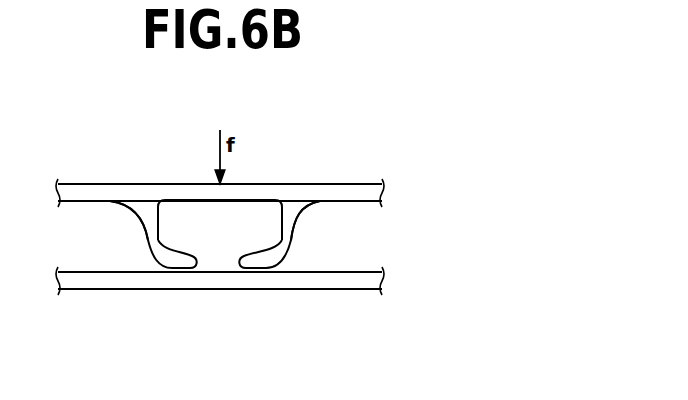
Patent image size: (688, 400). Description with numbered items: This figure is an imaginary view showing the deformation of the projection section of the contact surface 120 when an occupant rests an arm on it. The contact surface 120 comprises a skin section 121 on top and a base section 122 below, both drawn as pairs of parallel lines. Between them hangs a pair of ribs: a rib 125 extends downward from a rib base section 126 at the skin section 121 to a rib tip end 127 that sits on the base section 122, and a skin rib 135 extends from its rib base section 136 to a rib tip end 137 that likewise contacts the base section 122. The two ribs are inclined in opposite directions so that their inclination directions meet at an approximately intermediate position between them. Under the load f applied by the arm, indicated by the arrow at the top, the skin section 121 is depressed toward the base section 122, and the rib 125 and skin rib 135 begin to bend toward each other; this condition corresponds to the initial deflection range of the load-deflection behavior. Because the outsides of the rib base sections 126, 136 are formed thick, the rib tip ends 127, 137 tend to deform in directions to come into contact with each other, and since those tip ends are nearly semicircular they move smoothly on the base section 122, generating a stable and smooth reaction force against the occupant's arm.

The contact surface 120 is at (392, 109).
The skin section 121 is at (185, 183).
The base section 122 is at (350, 278).
The rib 125 is at (151, 239).
The rib base section 126 is at (142, 201).
The rib tip end 127 is at (181, 269).
The skin rib 135 is at (286, 239).
The rib base section 136 is at (294, 209).
The rib tip end 137 is at (253, 268).